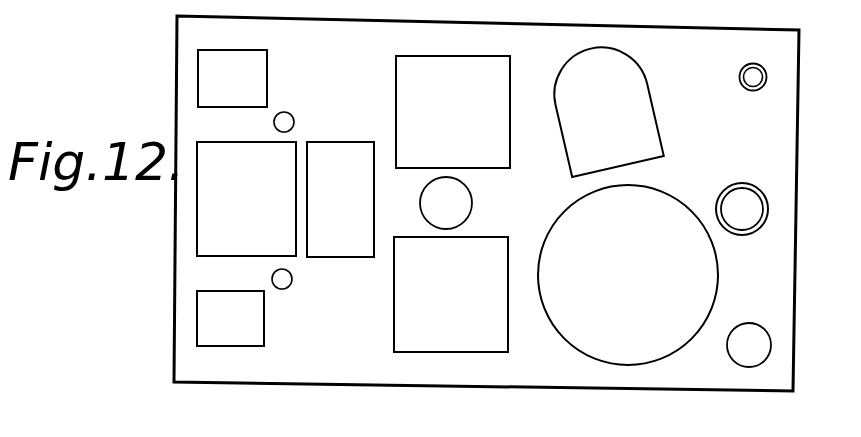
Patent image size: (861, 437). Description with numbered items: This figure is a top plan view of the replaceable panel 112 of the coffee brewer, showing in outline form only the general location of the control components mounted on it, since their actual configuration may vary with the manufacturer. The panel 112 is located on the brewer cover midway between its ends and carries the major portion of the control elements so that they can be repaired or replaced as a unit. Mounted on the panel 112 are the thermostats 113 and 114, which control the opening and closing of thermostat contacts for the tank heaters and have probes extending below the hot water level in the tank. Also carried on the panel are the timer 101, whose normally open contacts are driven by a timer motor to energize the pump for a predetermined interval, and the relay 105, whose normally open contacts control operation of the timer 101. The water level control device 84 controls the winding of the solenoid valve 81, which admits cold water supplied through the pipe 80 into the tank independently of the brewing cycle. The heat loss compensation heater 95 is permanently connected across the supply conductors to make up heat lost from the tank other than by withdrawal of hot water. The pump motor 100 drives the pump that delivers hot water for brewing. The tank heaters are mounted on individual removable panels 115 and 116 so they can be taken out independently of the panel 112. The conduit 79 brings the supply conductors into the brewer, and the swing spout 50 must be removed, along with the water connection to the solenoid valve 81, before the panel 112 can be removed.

The replaceable panel 112 is at (160, 41).
The thermostat 113 is at (246, 86).
The timer 101 is at (258, 204).
The relay 105 is at (356, 206).
The thermostat 114 is at (242, 326).
The removable panel 115 is at (467, 121).
The removable panel 116 is at (460, 310).
The water level control device 84 is at (473, 203).
The heat loss compensation heater 95 is at (292, 114).
The solenoid valve 81 is at (608, 129).
The pump motor 100 is at (644, 268).
The pipe 80 is at (743, 68).
The swing spout 50 is at (752, 183).
The conduit 79 is at (751, 326).